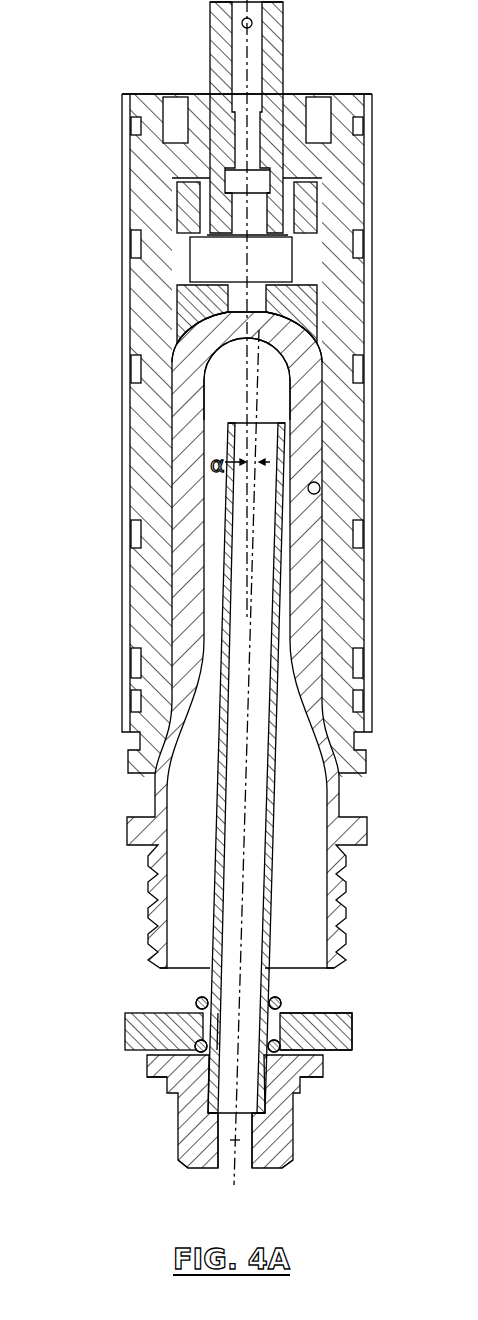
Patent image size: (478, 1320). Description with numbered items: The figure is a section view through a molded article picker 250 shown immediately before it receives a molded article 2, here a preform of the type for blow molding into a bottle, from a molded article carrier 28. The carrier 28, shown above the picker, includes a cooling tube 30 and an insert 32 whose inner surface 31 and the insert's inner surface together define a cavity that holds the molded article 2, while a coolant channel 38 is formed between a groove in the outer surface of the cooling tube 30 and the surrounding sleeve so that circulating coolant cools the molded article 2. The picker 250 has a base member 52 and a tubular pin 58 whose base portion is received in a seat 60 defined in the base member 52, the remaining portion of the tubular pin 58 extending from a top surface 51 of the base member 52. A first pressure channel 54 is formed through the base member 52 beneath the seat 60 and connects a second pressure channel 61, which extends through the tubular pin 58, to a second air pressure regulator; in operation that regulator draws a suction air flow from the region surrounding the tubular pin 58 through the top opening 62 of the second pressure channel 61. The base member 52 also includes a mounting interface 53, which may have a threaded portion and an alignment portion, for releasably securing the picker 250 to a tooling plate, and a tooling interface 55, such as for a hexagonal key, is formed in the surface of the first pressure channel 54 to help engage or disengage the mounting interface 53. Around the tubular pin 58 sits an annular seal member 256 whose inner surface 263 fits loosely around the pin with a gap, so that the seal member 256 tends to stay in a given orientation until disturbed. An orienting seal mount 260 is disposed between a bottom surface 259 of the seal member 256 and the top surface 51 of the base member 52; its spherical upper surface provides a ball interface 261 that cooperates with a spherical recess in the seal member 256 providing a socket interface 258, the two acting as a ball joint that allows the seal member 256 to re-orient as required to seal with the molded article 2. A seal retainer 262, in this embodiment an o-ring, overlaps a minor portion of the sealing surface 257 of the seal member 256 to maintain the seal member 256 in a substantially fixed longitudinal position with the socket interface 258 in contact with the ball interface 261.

The molded article carrier 28 is at (407, 100).
The cooling tube 30 is at (340, 277).
The insert 32 is at (307, 327).
The top opening 62 is at (215, 338).
The molded article 2 is at (307, 448).
The inner surface 31 is at (320, 489).
The coolant channel 38 is at (356, 538).
The tubular pin 58 is at (272, 832).
The second pressure channel 61 is at (250, 888).
The inner surface 263 is at (262, 1025).
The ball interface 261 is at (288, 1022).
The top surface 51 is at (290, 1046).
The sealing surface 257 is at (347, 1013).
The seal member 256 is at (352, 1020).
The seal retainer 262 is at (196, 1003).
The orienting seal mount 260 is at (195, 1045).
The bottom surface 259 is at (333, 1053).
The socket interface 258 is at (253, 1103).
The mounting interface 53 is at (150, 1055).
The seat 60 is at (258, 1125).
The base member 52 is at (282, 1157).
The first pressure channel 54 is at (228, 1153).
The tooling interface 55 is at (252, 1147).
The molded article picker 250 is at (355, 1143).